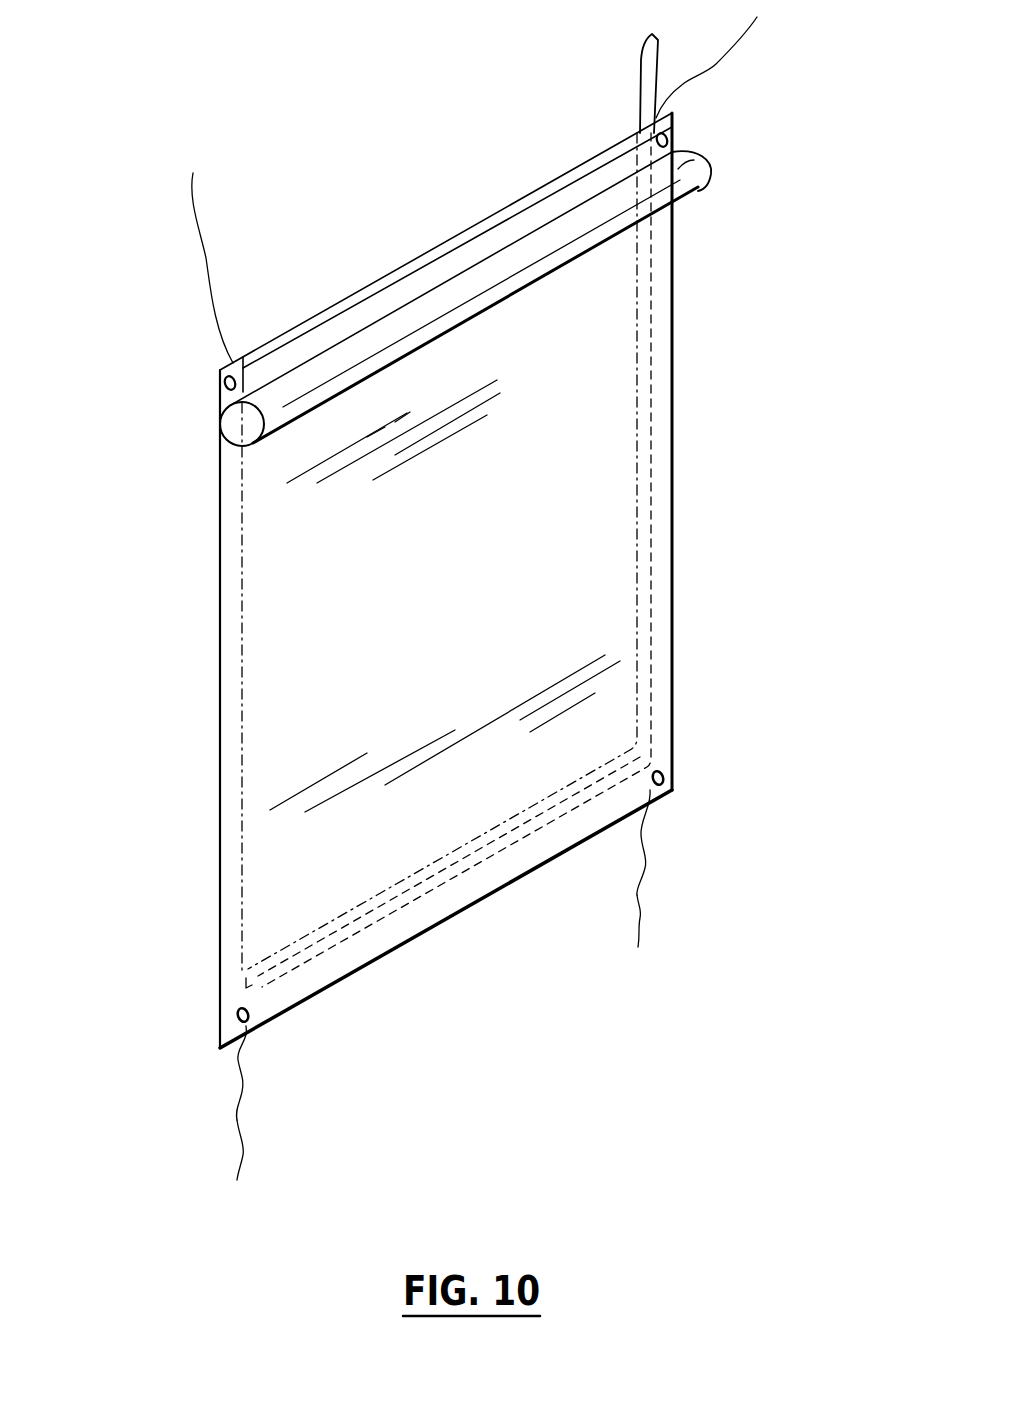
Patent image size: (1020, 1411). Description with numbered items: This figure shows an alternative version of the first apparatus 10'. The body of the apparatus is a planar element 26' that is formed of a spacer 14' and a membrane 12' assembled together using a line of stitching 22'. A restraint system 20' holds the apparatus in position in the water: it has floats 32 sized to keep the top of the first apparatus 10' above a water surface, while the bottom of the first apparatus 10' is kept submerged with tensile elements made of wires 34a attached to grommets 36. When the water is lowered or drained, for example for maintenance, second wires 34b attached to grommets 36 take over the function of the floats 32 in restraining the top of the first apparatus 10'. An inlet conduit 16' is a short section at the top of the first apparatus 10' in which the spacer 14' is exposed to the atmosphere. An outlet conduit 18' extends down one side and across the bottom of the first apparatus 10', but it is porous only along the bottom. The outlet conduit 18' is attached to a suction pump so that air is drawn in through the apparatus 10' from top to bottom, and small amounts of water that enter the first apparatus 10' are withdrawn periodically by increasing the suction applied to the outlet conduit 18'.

The first apparatus 10' is at (74, 839).
The membrane 12' is at (446, 580).
The spacer 14' is at (446, 252).
The inlet conduit 16' is at (457, 245).
The outlet conduit 18' is at (506, 510).
The restraint system 20' is at (516, 587).
The line of stitching 22' is at (437, 679).
The planar element 26' is at (445, 733).
The float 32 is at (683, 167).
The wire 34a is at (643, 922).
The second wire 34b is at (542, 190).
The grommet 36 is at (670, 136).